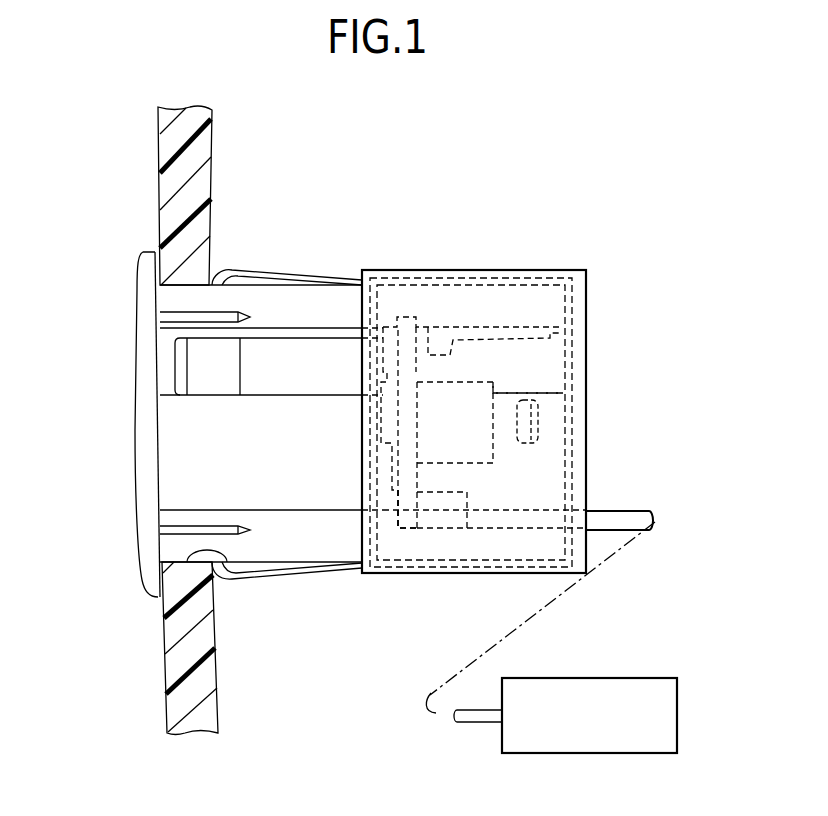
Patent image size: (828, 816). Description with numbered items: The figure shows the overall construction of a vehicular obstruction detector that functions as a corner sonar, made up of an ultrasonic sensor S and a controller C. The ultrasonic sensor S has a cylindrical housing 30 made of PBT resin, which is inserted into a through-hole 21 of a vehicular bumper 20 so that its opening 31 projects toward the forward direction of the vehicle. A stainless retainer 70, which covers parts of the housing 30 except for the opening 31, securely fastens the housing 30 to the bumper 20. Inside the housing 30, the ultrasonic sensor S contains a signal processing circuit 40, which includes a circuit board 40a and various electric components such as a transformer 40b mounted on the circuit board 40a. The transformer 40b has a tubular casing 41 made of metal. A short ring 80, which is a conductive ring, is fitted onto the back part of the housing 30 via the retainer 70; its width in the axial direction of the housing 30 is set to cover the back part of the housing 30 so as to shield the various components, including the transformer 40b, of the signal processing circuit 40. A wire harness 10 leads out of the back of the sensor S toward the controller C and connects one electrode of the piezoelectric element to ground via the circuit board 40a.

The wire harness 10 is at (630, 511).
The vehicular bumper 20 is at (212, 181).
The through-hole 21 is at (237, 578).
The cylindrical housing 30 is at (133, 575).
The opening 31 is at (148, 392).
The signal processing circuit 40 is at (402, 306).
The circuit board 40a is at (412, 522).
The transformer 40b is at (510, 380).
The tubular casing 41 is at (493, 455).
The stainless retainer 70 is at (272, 272).
The short ring 80 is at (534, 264).
The ultrasonic sensor S is at (462, 264).
The controller C is at (630, 668).